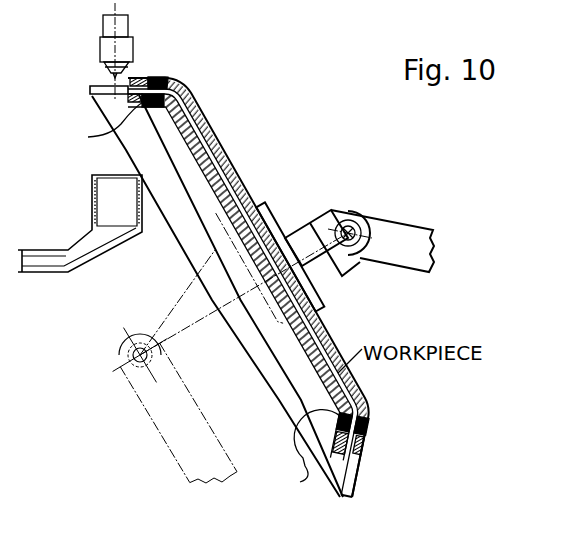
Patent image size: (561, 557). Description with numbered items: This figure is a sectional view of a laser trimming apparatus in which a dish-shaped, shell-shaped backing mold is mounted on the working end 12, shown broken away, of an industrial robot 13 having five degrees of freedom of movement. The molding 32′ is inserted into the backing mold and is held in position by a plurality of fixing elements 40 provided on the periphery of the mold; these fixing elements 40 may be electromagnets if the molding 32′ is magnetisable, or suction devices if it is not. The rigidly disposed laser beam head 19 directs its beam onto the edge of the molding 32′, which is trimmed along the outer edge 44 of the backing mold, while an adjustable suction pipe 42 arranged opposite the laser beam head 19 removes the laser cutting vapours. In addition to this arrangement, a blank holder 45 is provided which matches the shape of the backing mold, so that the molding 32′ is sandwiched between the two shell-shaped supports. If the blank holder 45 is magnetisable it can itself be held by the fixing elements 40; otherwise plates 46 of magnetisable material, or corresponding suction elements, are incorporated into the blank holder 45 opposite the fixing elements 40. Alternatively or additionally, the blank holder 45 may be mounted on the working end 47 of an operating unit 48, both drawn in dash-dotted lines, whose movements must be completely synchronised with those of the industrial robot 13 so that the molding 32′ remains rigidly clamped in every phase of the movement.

The laser beam head 19 is at (127, 18).
The outer edge 44 is at (134, 77).
The fixing elements 40 is at (164, 77).
The plates 46 is at (196, 304).
The suction pipe 42 is at (92, 199).
The blank holder 45 is at (195, 254).
The working end 12 is at (310, 222).
The industrial robot 13 is at (410, 221).
The working end 47 is at (218, 328).
The operating unit 48 is at (173, 413).
The molding 32′ is at (350, 494).